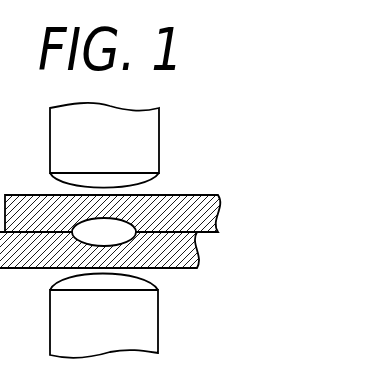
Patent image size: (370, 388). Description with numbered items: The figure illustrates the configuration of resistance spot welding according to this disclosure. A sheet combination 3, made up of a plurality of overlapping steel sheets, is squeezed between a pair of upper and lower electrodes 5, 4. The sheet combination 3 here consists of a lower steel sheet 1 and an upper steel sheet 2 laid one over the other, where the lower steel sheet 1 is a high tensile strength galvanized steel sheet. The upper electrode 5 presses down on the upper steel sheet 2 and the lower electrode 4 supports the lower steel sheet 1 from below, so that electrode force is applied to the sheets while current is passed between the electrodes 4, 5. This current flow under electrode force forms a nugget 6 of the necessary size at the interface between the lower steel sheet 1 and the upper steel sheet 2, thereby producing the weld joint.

The lower steel sheet 1 is at (137, 252).
The upper steel sheet 2 is at (213, 213).
The sheet combination 3 is at (155, 235).
The lower electrode 4 is at (145, 320).
The upper electrode 5 is at (147, 148).
The nugget 6 is at (87, 231).